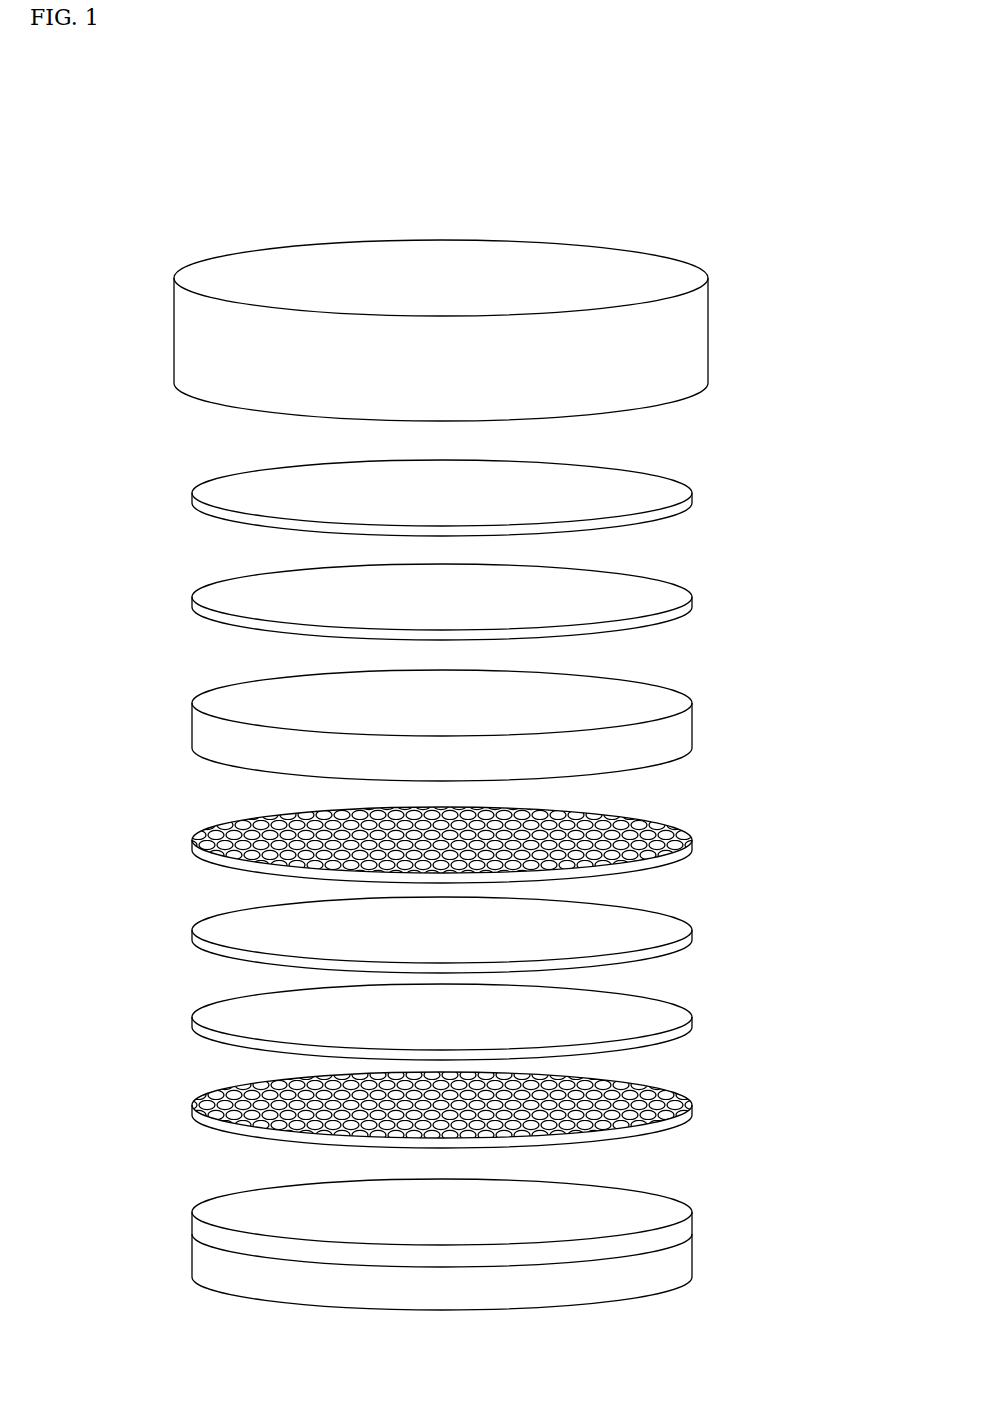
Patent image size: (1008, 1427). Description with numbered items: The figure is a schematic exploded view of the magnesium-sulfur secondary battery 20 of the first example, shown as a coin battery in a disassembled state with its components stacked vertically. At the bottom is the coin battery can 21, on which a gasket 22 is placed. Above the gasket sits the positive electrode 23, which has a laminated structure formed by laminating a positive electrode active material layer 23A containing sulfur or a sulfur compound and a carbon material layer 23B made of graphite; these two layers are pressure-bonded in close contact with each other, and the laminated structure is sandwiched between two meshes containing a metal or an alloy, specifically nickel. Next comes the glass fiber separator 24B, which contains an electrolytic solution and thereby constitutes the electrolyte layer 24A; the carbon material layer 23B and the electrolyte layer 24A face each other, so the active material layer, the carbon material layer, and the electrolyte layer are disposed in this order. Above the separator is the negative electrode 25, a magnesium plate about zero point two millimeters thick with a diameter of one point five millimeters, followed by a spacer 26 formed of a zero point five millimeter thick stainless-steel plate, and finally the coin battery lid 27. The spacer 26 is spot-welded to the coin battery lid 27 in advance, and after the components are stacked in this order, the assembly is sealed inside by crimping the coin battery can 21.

The magnesium-sulfur secondary battery 20 is at (334, 130).
The coin battery can 21 is at (660, 1270).
The gasket 22 is at (662, 1237).
The positive electrode 23 is at (539, 981).
The positive electrode active material layer 23A is at (692, 1018).
The carbon material layer 23B is at (692, 931).
The electrolyte layer 24A is at (663, 735).
The separator 24B is at (540, 725).
The negative electrode 25 is at (692, 598).
The spacer 26 is at (692, 494).
The coin battery lid 27 is at (670, 337).